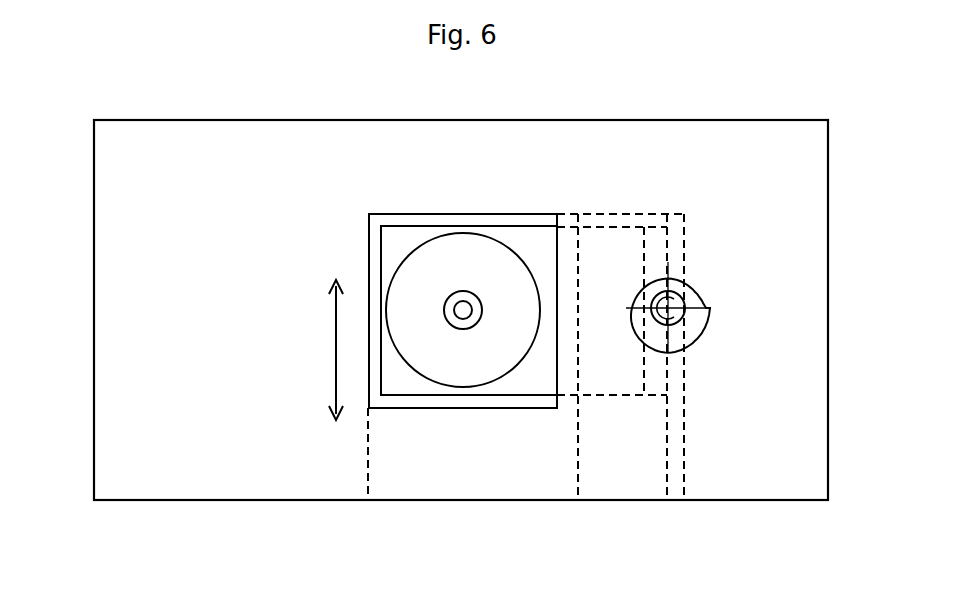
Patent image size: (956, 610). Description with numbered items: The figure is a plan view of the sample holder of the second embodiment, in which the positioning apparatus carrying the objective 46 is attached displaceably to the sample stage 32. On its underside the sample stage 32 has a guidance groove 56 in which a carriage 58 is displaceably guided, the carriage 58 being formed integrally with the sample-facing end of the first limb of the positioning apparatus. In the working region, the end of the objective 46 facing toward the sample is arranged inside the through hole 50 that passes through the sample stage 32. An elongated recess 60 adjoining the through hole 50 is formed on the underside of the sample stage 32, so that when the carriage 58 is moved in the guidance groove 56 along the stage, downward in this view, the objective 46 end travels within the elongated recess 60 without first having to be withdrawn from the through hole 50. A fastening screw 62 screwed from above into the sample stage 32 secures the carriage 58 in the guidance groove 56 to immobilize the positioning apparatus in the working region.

The sample stage 32 is at (102, 254).
The objective 46 is at (463, 248).
The through hole 50 is at (541, 246).
The carriage 58 is at (624, 247).
The elongated recess 60 is at (442, 488).
The guidance groove 56 is at (621, 490).
The fastening screw 62 is at (706, 292).